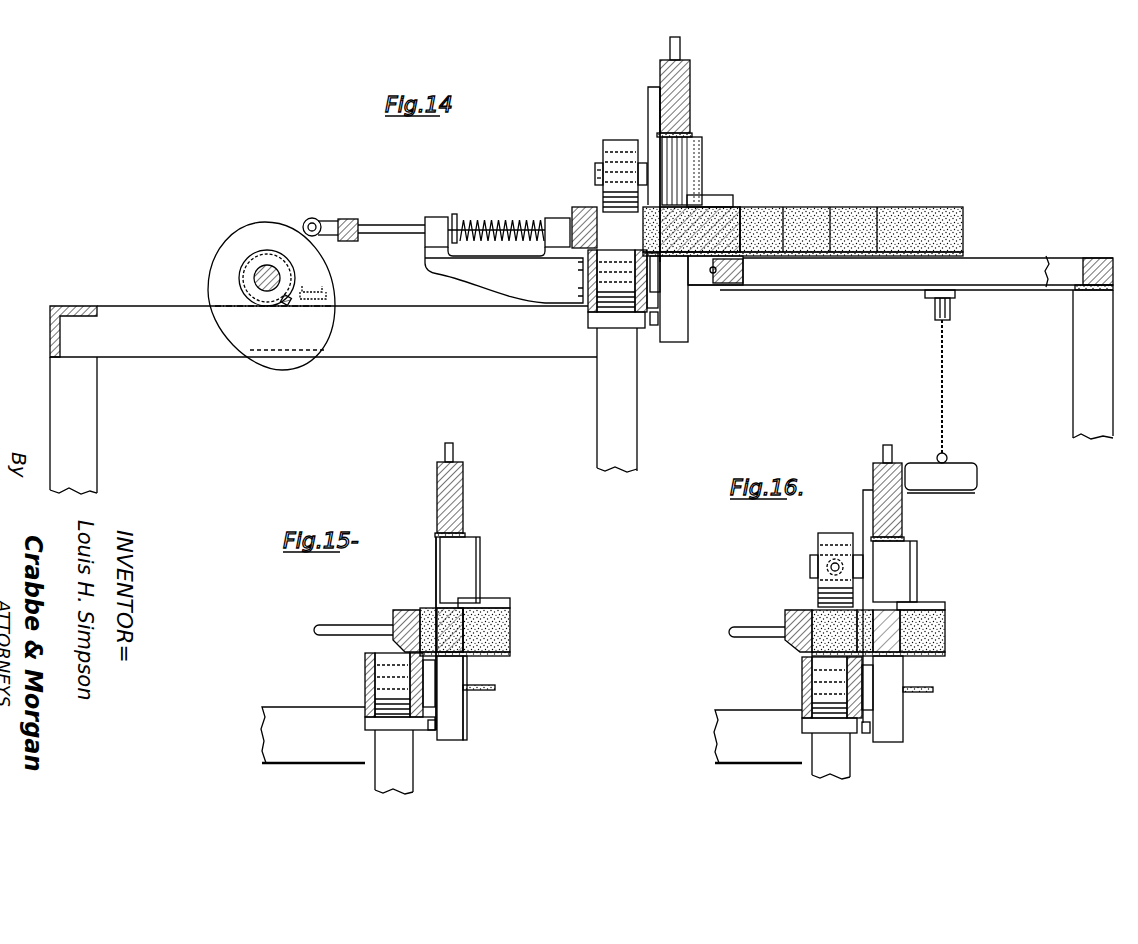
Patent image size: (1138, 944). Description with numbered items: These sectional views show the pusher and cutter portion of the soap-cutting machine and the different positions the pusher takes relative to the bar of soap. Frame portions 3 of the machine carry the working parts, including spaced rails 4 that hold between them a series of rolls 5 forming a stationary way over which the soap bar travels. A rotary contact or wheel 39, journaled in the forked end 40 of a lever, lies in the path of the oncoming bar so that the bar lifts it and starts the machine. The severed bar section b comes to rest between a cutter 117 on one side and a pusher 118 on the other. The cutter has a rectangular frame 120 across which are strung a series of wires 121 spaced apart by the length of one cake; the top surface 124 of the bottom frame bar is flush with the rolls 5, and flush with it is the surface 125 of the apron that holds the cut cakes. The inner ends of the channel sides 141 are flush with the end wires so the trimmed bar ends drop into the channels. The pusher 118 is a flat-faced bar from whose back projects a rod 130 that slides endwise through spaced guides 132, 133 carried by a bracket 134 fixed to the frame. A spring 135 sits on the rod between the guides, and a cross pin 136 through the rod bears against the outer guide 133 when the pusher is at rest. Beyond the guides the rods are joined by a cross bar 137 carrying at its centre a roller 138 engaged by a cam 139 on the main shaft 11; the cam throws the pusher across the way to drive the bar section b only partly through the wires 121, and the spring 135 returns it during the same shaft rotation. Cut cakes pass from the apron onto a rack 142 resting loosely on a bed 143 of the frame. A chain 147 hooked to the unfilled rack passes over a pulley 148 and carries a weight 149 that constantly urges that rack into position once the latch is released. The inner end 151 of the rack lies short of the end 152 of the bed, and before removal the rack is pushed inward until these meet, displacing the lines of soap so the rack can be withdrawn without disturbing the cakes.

In FIG. 15, the frame portions 3 is at (313, 735).
In FIG. 15, the rails 4 is at (368, 682).
In FIG. 16, the rails 4 is at (802, 672).
In FIG. 15, the rolls 5 is at (386, 652).
In FIG. 16, the rolls 5 is at (832, 692).
In FIG. 14, the main shaft 11 is at (256, 280).
In FIG. 14, the rotary contact or wheel 39 is at (603, 149).
In FIG. 16, the rotary contact or wheel 39 is at (818, 542).
In FIG. 14, the forked end 40 is at (595, 175).
In FIG. 16, the forked end 40 is at (810, 571).
In FIG. 14, the cutter 117 is at (701, 147).
In FIG. 14, the pusher 118 is at (576, 208).
In FIG. 15, the pusher 118 is at (405, 612).
In FIG. 16, the pusher 118 is at (800, 612).
In FIG. 14, the rectangular frame 120 is at (690, 70).
In FIG. 15, the rectangular frame 120 is at (463, 468).
In FIG. 16, the rectangular frame 120 is at (897, 468).
In FIG. 14, the wires 121 is at (658, 145).
In FIG. 15, the wires 121 is at (436, 570).
In FIG. 16, the wires 121 is at (876, 700).
In FIG. 14, the top surface 124 is at (676, 257).
In FIG. 15, the top surface 124 is at (440, 706).
In FIG. 14, the surface 125 is at (708, 248).
In FIG. 15, the surface 125 is at (492, 648).
In FIG. 16, the surface 125 is at (935, 650).
In FIG. 14, the rod 130 is at (402, 234).
In FIG. 15, the rod 130 is at (355, 628).
In FIG. 16, the rod 130 is at (758, 630).
In FIG. 14, the guide 132 is at (552, 218).
In FIG. 14, the guide 133 is at (432, 217).
In FIG. 14, the bracket 134 is at (530, 284).
In FIG. 14, the spring 135 is at (492, 221).
In FIG. 14, the cross pin 136 is at (455, 214).
In FIG. 14, the cross bar 137 is at (348, 219).
In FIG. 14, the roller 138 is at (311, 218).
In FIG. 14, the cam 139 is at (330, 284).
In FIG. 14, the sides of the channels 141 is at (700, 172).
In FIG. 15, the sides of the channels 141 is at (478, 560).
In FIG. 16, the sides of the channels 141 is at (917, 578).
In FIG. 14, the rack 142 is at (1096, 258).
In FIG. 14, the bed 143 is at (706, 288).
In FIG. 15, the bed 143 is at (497, 688).
In FIG. 16, the bed 143 is at (928, 693).
In FIG. 14, the chain 147 is at (944, 385).
In FIG. 14, the pulley 148 is at (950, 315).
In FIG. 14, the weight 149 is at (960, 491).
In FIG. 14, the inner end of the rack 151 is at (745, 270).
In FIG. 14, the end of the bed 152 is at (700, 295).
In FIG. 15, the end of the bed 152 is at (465, 670).
In FIG. 16, the end of the bed 152 is at (905, 670).
In FIG. 14, the bar section b is at (680, 228).
In FIG. 15, the bar section b is at (447, 625).
In FIG. 16, the bar section b is at (892, 618).
In FIG. 14, the bar c is at (860, 212).
In FIG. 15, the bar c is at (505, 616).
In FIG. 16, the bar c is at (946, 618).